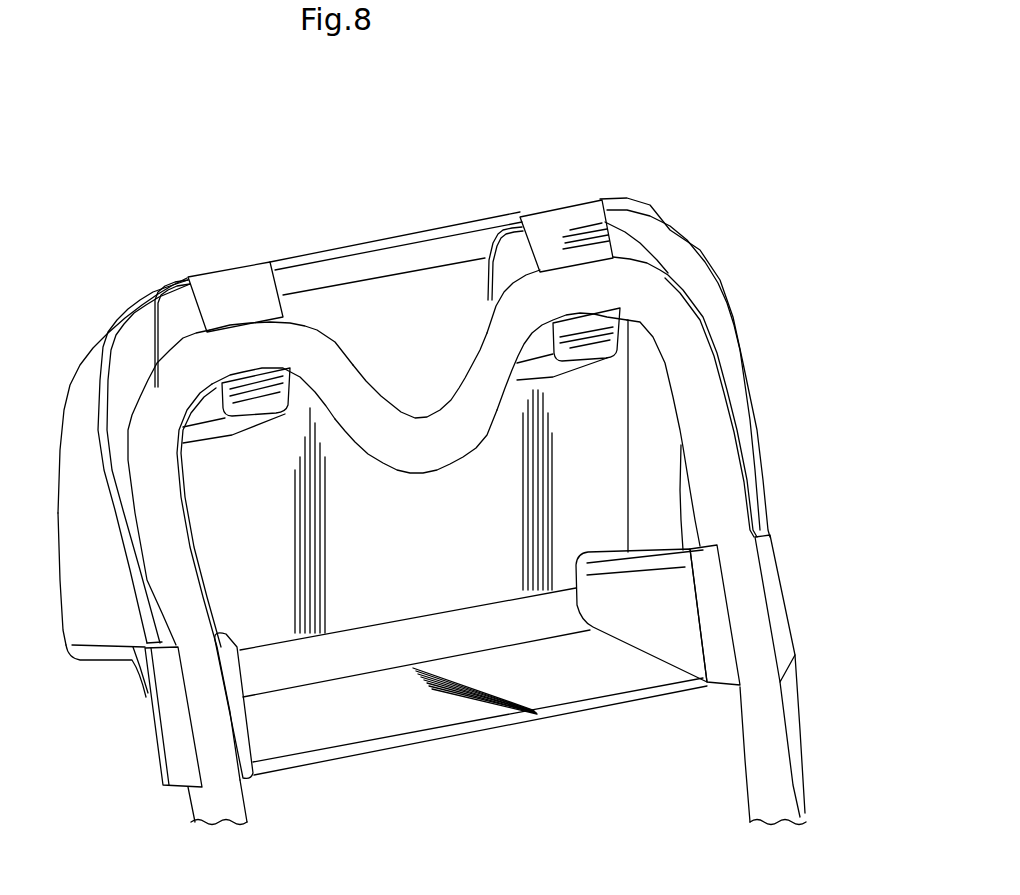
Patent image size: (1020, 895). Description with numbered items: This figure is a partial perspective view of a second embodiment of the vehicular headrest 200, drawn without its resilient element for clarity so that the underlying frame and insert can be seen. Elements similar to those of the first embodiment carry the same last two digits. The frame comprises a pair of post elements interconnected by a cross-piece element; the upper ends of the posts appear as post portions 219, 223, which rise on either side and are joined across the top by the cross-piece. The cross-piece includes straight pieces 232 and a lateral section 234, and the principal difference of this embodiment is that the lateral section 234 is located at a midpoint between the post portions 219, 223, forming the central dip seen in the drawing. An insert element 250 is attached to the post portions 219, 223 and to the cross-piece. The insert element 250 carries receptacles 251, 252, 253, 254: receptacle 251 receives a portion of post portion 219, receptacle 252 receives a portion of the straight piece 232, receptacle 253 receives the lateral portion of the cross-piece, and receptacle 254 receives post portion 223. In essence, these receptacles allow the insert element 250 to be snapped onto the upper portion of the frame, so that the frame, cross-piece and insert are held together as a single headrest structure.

The vehicular headrest 200 is at (464, 511).
The post portion 219 is at (342, 460).
The post portion 223 is at (731, 539).
The straight piece 232 is at (381, 280).
The lateral section 234 is at (416, 316).
The insert element 250 is at (103, 637).
The receptacle 251 is at (154, 752).
The receptacle 252 is at (258, 245).
The receptacle 253 is at (579, 197).
The receptacle 254 is at (816, 654).